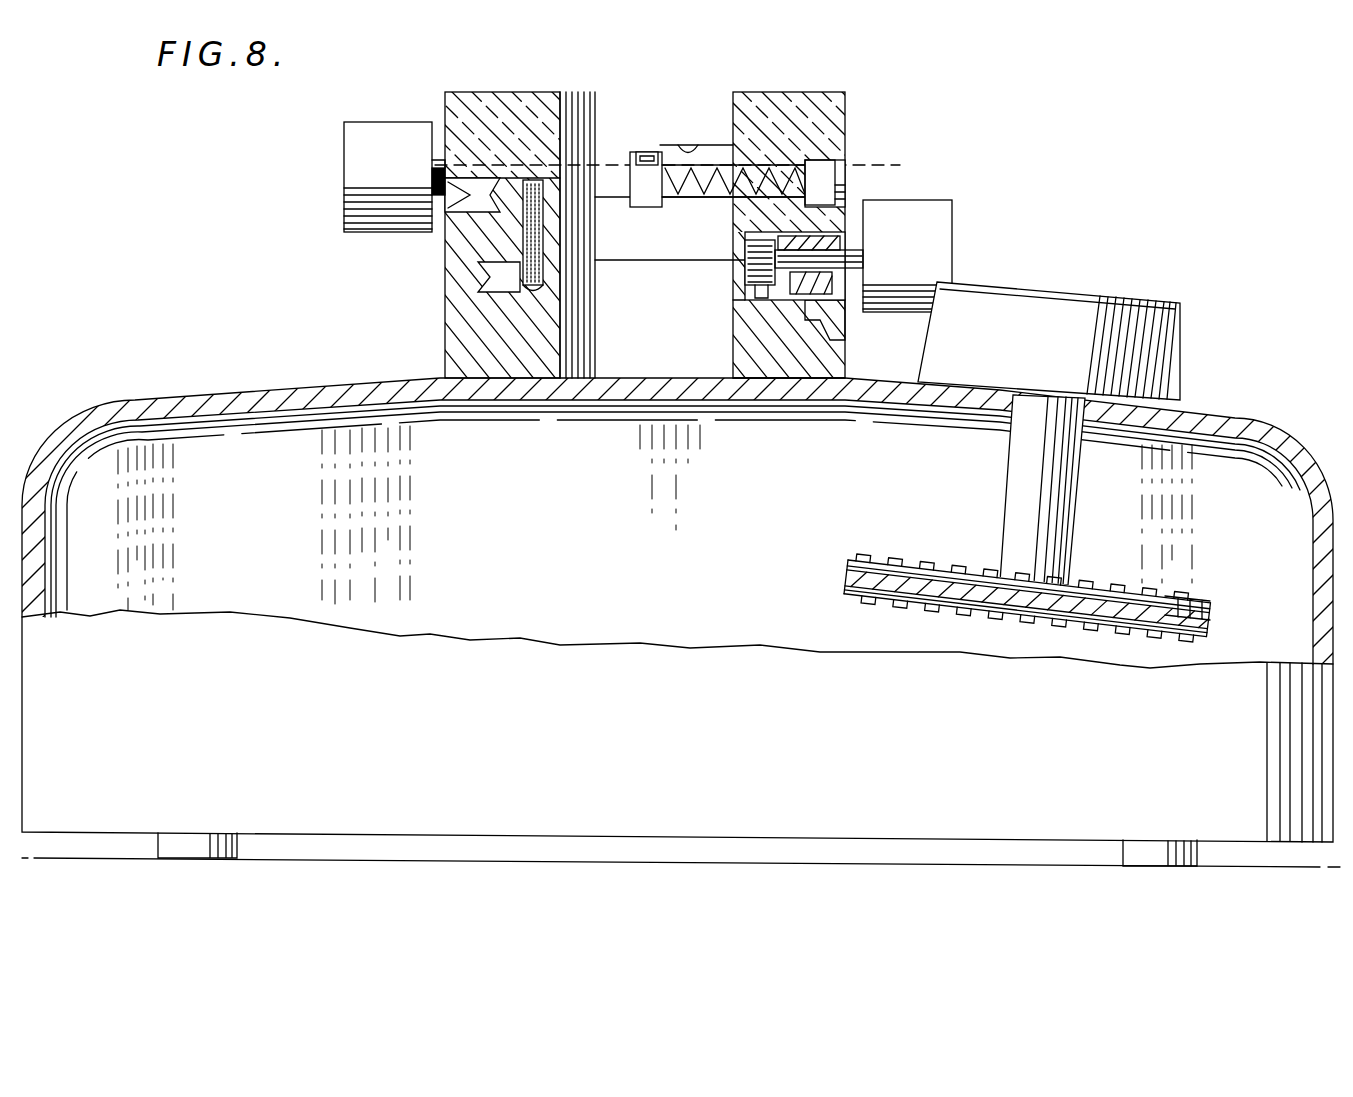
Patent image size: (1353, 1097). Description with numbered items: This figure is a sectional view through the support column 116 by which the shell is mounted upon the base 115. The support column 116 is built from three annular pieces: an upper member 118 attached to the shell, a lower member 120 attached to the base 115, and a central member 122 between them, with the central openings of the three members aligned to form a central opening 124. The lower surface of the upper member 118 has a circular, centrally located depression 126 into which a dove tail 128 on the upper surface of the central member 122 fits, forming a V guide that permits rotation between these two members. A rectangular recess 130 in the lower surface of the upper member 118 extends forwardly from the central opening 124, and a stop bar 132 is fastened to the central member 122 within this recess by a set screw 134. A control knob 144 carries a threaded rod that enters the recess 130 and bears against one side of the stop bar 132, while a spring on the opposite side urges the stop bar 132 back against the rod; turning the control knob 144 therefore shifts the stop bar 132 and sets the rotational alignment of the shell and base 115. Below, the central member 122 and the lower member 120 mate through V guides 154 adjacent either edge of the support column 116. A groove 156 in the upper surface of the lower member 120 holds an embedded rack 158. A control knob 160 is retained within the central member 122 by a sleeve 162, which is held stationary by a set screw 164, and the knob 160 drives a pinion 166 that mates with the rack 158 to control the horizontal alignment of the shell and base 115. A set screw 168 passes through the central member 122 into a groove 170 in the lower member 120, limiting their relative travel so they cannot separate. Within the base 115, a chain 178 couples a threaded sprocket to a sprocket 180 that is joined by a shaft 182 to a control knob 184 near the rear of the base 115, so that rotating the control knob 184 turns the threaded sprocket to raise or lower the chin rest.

The base 115 is at (318, 400).
The support column 116 is at (847, 210).
The upper member 118 is at (832, 140).
The lower member 120 is at (815, 372).
The central member 122 is at (470, 240).
The central opening 124 is at (580, 352).
The depression 126 is at (470, 205).
The dove tail 128 is at (447, 185).
The rectangular recess 130 is at (690, 148).
The stop bar 132 is at (643, 177).
The set screw 134 is at (648, 157).
The control knob 144 is at (346, 193).
The V guides 154 is at (480, 286).
The groove 156 is at (760, 286).
The rack 158 is at (763, 300).
The control knob 160 is at (930, 258).
The sleeve 162 is at (826, 246).
The set screw 164 is at (828, 300).
The pinion 166 is at (862, 258).
The set screw 168 is at (545, 245).
The groove 170 is at (566, 302).
The chain 178 is at (1200, 596).
The sprocket 180 is at (960, 580).
The shaft 182 is at (1025, 465).
The control knob 184 is at (1060, 315).